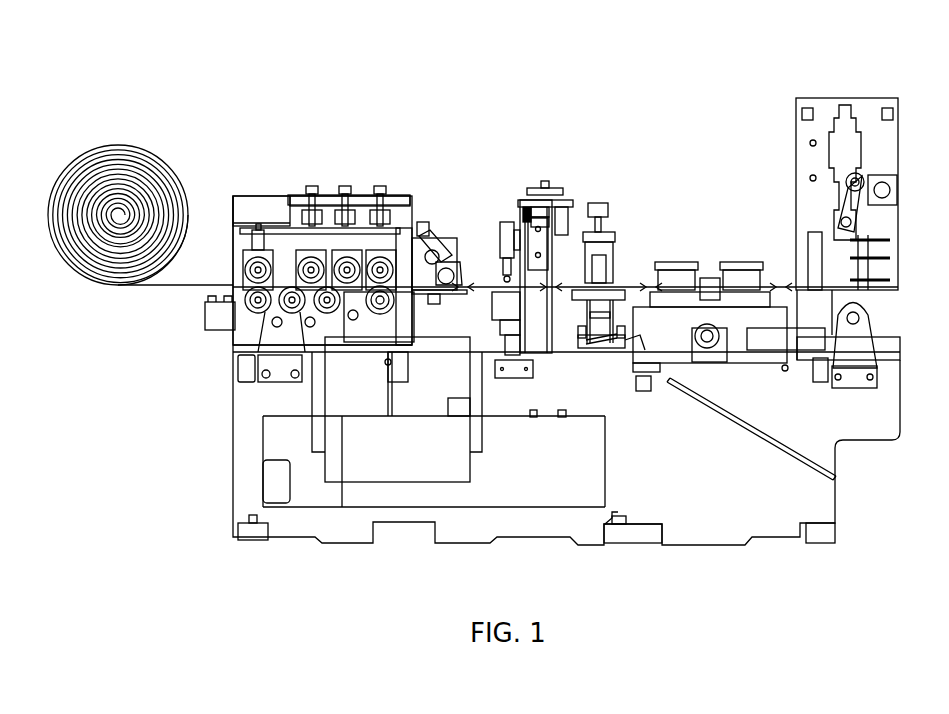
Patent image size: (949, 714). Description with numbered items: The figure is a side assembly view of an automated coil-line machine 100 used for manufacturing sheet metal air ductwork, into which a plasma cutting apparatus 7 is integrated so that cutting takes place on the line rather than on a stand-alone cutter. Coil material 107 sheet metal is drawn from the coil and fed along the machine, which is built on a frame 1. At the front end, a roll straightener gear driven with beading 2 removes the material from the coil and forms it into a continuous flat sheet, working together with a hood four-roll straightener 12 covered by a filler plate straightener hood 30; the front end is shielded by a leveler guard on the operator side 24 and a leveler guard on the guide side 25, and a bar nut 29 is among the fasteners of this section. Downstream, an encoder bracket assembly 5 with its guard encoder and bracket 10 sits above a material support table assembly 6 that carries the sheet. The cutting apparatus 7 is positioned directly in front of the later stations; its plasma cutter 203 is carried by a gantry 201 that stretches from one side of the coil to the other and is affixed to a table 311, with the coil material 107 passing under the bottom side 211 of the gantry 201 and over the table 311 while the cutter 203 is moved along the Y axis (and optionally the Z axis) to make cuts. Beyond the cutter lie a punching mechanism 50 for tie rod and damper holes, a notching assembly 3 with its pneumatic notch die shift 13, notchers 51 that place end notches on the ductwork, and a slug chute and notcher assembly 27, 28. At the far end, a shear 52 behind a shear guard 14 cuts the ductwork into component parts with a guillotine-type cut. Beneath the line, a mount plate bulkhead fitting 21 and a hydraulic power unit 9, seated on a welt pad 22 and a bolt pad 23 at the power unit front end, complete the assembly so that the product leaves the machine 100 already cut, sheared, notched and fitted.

The coil-line machine 100 is at (745, 72).
The frame 1 is at (900, 398).
The coil material 107 is at (143, 148).
The hood 4-roll straightener 12 is at (238, 168).
The guard, leveler, front end, op side 24 is at (258, 206).
The filler plate straightener hood 30 is at (277, 195).
The guard, leveler, front end, guide side 25 is at (328, 188).
The roll straightener gear driven with beading 2 is at (344, 186).
The bar nut 29 is at (388, 365).
The guard encoder and bracket 10 is at (437, 235).
The encoder bracket assembly 5 is at (420, 225).
The material support table assembly 6 is at (448, 282).
The table 311 is at (493, 304).
The cutting apparatus 7 is at (549, 170).
The cutter 203 is at (505, 215).
The gantry 201 is at (577, 235).
The bottom side 211 is at (538, 282).
The notching assembly 3 is at (714, 255).
The punching mechanism 50 is at (621, 198).
The slug chute and notcher assembly 27 is at (622, 352).
The notchers 51 is at (668, 330).
The pneumatic schematic notch die shift 13 is at (678, 262).
The shear guard 14 is at (862, 78).
The shear 52 is at (885, 283).
The slug chute and notcher assembly 28 is at (750, 412).
The mount plate—bulkhead fitting 21 is at (392, 400).
The welt pad, power unit, front end 22 is at (640, 522).
The bolt pad, power unit, front end 23 is at (618, 525).
The hydraulic power unit 9 is at (614, 520).